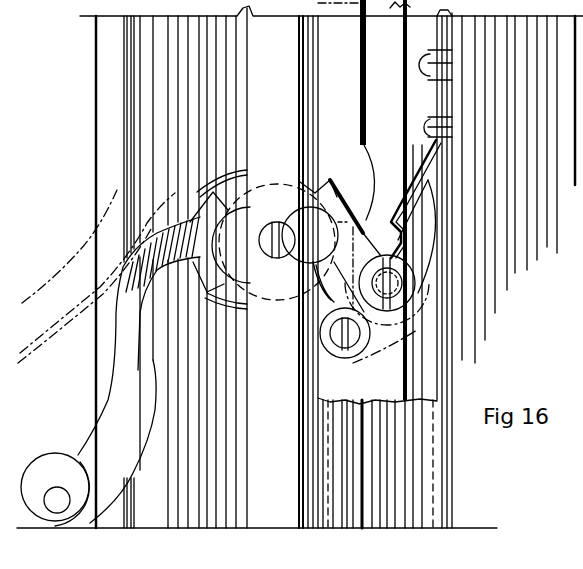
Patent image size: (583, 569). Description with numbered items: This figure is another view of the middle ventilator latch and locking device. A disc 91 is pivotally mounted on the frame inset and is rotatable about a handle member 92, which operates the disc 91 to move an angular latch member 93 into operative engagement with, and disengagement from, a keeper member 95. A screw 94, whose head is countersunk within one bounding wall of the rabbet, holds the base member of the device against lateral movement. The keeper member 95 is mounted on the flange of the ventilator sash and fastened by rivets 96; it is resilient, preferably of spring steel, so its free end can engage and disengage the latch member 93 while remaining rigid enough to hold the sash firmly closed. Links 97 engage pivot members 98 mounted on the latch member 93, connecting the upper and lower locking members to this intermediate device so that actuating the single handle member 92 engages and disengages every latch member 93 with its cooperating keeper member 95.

The disc 91 is at (240, 240).
The handle member 92 is at (94, 452).
The angular latch member 93 is at (334, 201).
The screw 94 is at (259, 234).
The keeper member 95 is at (403, 190).
The rivets 96 is at (427, 64).
The links 97 is at (374, 60).
The pivot members 98 is at (397, 273).